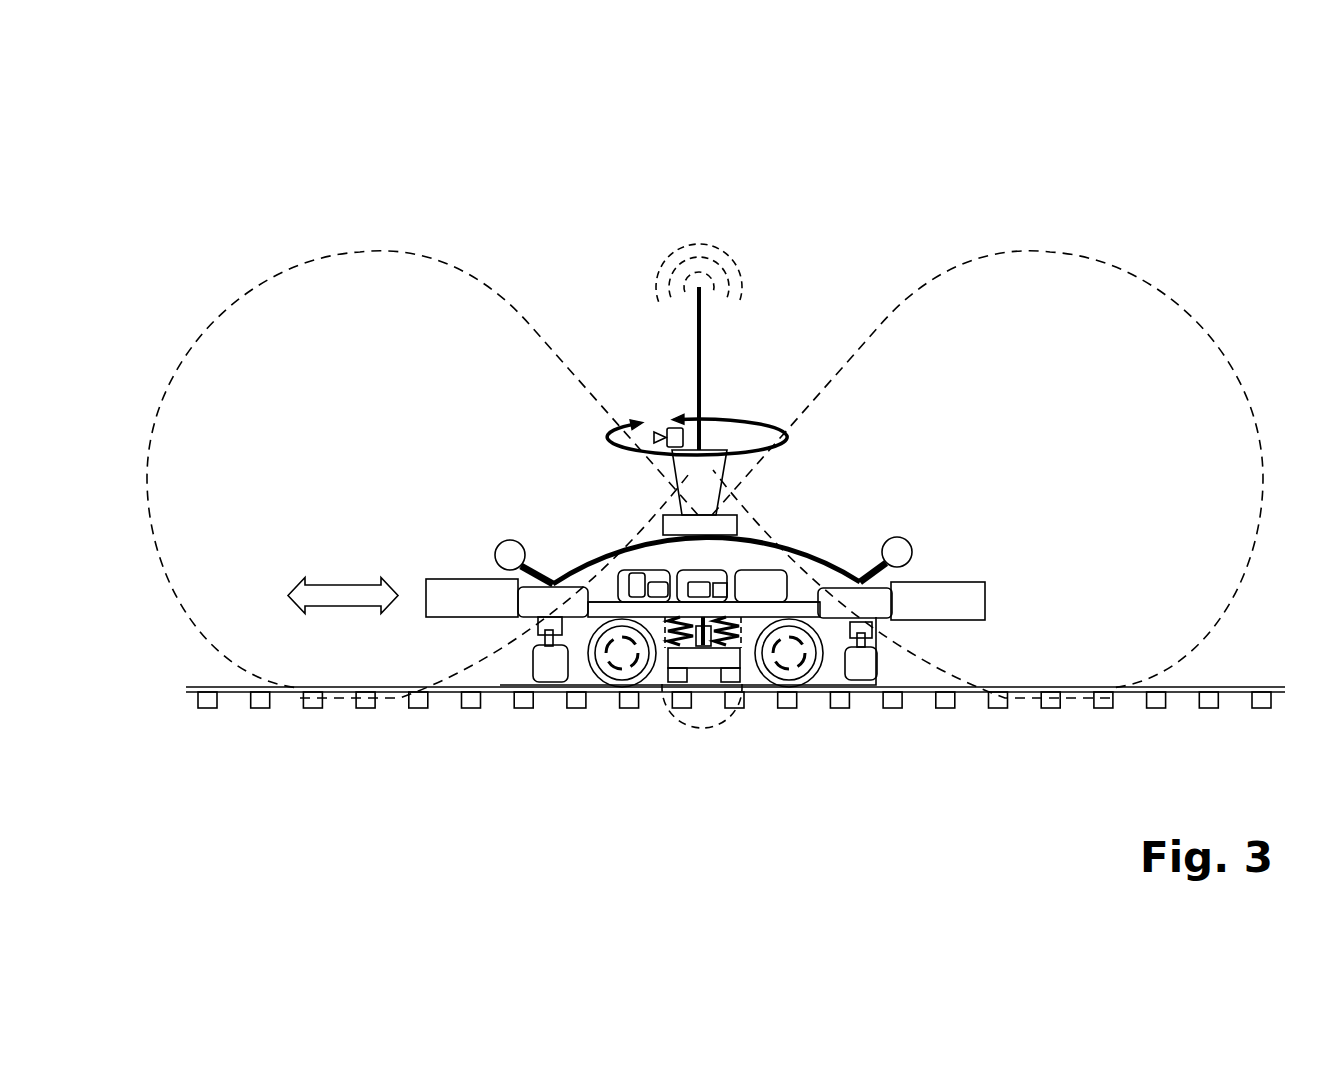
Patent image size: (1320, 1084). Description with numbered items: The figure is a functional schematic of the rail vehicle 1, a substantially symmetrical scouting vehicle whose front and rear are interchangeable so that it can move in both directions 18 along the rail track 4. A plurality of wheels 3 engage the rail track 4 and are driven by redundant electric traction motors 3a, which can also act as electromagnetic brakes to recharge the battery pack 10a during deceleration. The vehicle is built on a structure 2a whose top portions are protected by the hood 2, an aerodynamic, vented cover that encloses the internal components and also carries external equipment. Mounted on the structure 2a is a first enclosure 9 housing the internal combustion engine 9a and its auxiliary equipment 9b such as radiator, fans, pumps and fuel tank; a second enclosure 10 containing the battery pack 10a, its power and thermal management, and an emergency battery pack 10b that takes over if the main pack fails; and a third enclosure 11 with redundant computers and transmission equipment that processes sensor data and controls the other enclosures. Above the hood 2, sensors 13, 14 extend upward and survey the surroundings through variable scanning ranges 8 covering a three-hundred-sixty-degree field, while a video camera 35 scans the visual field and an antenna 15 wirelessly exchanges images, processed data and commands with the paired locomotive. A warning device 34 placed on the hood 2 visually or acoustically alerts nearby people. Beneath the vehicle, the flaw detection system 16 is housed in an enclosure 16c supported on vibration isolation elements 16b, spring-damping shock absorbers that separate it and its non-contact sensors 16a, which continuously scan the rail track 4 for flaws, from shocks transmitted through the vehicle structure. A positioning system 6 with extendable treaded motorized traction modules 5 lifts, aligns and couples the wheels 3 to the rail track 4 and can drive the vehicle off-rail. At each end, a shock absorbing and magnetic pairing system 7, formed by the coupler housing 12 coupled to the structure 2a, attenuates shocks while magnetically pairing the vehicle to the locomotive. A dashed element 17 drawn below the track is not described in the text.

The rail vehicle 1 is at (496, 204).
The hood 2 is at (600, 600).
The structure 2a is at (803, 603).
The wheels 3 is at (600, 676).
The electric traction motors 3a is at (622, 660).
The rail track 4 is at (186, 690).
The tread-traction motor modules 5 is at (542, 660).
The positioning system 6 is at (540, 632).
The shock absorbing and magnetic pairing system 7 is at (445, 615).
The variable scanning ranges 8 is at (218, 316).
The first enclosure 9 is at (620, 572).
The internal combustion engine 9a is at (640, 582).
The IC engine auxiliary equipment 9b is at (655, 585).
The second enclosure 10 is at (680, 527).
The battery pack 10a is at (698, 588).
The emergency battery pack 10b is at (718, 590).
The third enclosure 11 is at (777, 585).
The coupler housing 12 is at (822, 580).
The sensor 13 is at (660, 540).
The sensor 14 is at (712, 480).
The antenna 15 is at (703, 385).
The flaw detection system 16 is at (703, 658).
The non-contact sensors 16a is at (678, 672).
The vibration isolation elements 16b is at (695, 650).
The enclosure 16c is at (705, 650).
The rail clamp 17 is at (737, 705).
The directions 18 is at (343, 585).
The warning device 34 is at (908, 545).
The video camera 35 is at (668, 432).